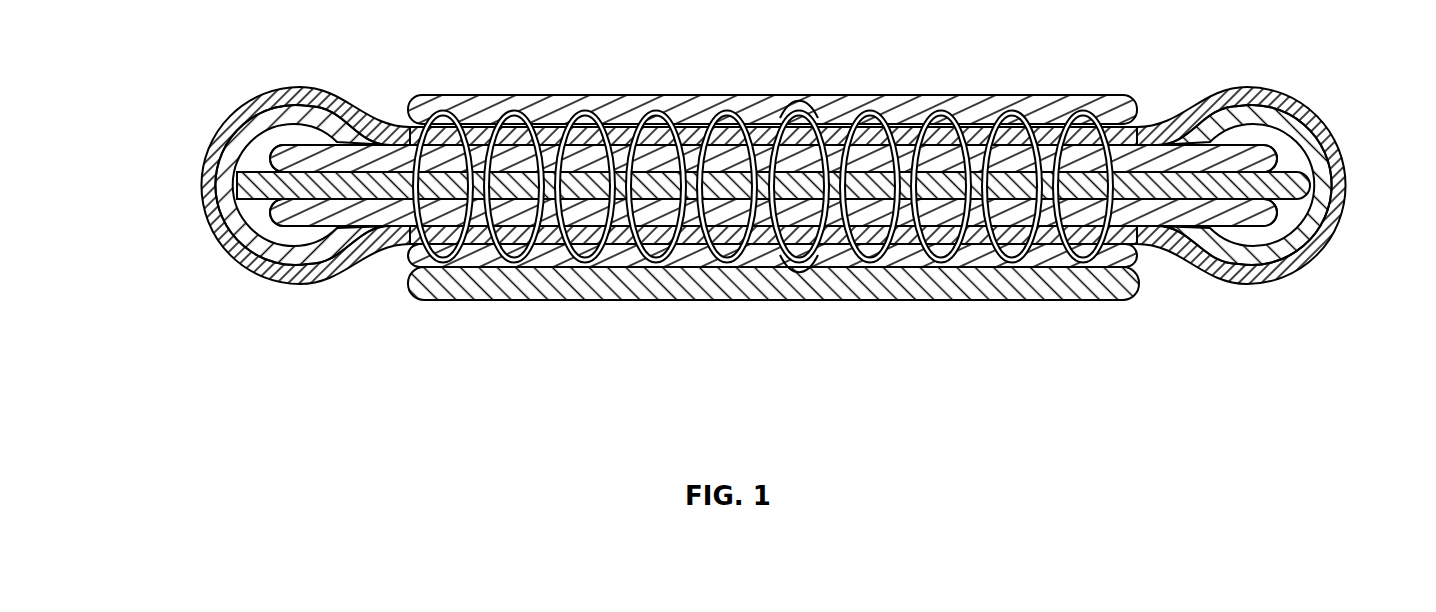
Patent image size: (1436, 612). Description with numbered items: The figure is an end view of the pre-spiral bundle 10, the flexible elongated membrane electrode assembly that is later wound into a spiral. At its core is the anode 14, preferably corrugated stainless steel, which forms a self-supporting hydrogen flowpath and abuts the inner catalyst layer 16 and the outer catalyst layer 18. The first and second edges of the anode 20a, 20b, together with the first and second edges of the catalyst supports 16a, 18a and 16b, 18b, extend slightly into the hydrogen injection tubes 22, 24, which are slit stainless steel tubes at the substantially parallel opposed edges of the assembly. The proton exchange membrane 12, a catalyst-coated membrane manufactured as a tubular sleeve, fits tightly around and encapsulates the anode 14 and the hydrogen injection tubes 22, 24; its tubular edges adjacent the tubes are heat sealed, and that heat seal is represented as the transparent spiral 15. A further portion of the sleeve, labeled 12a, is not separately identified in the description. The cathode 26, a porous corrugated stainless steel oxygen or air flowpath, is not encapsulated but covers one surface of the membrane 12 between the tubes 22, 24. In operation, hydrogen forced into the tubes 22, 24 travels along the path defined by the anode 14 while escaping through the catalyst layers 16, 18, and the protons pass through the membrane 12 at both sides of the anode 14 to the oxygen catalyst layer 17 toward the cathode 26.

The pre-spiral bundle 10 is at (945, 349).
The proton exchange membrane 12 is at (620, 123).
The sleeve bottom wall 12a is at (673, 266).
The anode 14 is at (470, 193).
The spiral 15 is at (1003, 113).
The inner catalyst layer 16 is at (1160, 153).
The first edge of the catalyst support 16a is at (303, 148).
The second edge of the catalyst support 16b is at (1258, 157).
The oxygen catalyst layer 17 is at (822, 104).
The outer catalyst layer 18 is at (1127, 217).
The first edge of the catalyst support 18a is at (1268, 217).
The second edge of the catalyst support 18b is at (303, 218).
The first edge of the anode 20a is at (1302, 163).
The second edge of the anode 20b is at (233, 237).
The hydrogen injection tube 22 is at (1346, 182).
The hydrogen injection tube 24 is at (262, 112).
The cathode 26 is at (1073, 285).